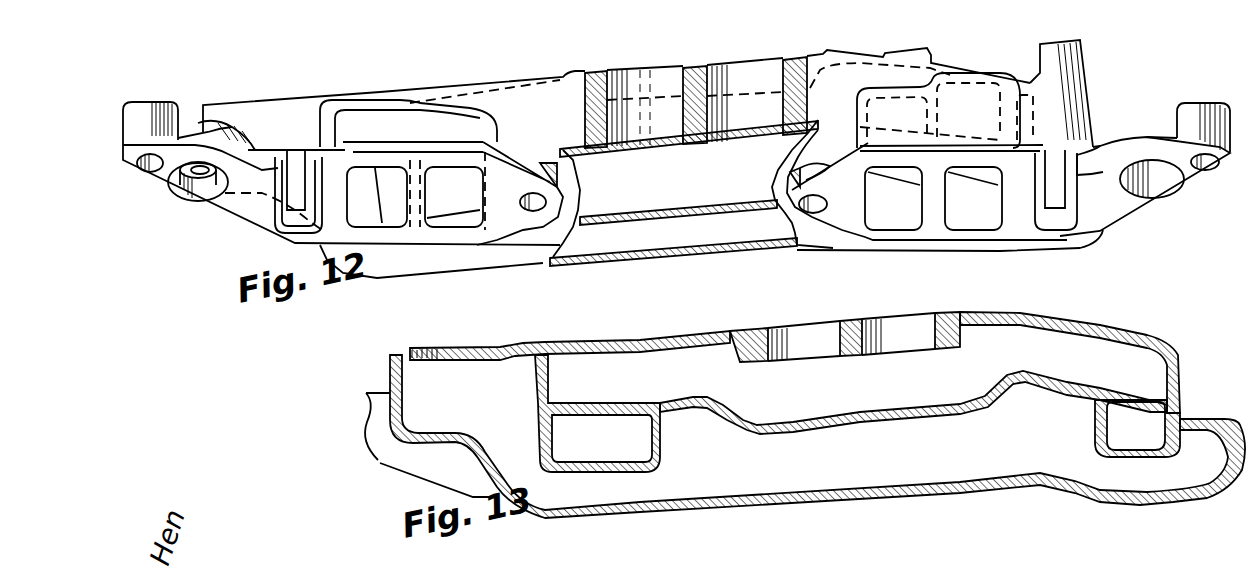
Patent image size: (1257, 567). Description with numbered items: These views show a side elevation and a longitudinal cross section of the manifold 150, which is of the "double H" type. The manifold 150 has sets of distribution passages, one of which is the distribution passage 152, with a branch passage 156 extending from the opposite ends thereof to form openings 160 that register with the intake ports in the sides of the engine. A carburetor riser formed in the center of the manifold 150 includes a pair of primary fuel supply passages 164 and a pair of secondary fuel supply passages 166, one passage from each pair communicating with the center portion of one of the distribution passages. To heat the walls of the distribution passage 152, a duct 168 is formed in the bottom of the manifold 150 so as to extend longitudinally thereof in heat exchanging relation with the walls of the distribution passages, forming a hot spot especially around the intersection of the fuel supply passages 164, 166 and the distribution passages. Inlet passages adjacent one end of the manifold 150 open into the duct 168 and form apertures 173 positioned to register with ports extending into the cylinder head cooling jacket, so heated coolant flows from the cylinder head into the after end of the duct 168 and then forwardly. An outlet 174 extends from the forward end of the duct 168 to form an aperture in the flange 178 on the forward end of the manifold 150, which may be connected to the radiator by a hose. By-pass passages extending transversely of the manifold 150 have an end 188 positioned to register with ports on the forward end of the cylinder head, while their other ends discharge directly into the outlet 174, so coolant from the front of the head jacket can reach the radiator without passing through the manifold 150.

In FIG. 12, the manifold 150 is at (162, 210).
In FIG. 13, the manifold 150 is at (376, 468).
In FIG. 12, the distribution passage 152 is at (660, 208).
In FIG. 13, the distribution passage 152 is at (858, 412).
In FIG. 13, the branch passage 156 is at (645, 455).
In FIG. 12, the openings 160 is at (428, 235).
In FIG. 12, the primary fuel supply passages 164 is at (675, 80).
In FIG. 13, the primary fuel supply passages 164 is at (832, 340).
In FIG. 12, the secondary fuel supply passages 166 is at (770, 76).
In FIG. 13, the secondary fuel supply passages 166 is at (920, 333).
In FIG. 12, the duct 168 is at (690, 244).
In FIG. 13, the duct 168 is at (850, 490).
In FIG. 12, the apertures 173 is at (1170, 182).
In FIG. 13, the outlet 174 is at (525, 330).
In FIG. 12, the flange 178 is at (247, 97).
In FIG. 13, the flange 178 is at (395, 352).
In FIG. 12, the end of by-pass passage 188 is at (203, 190).